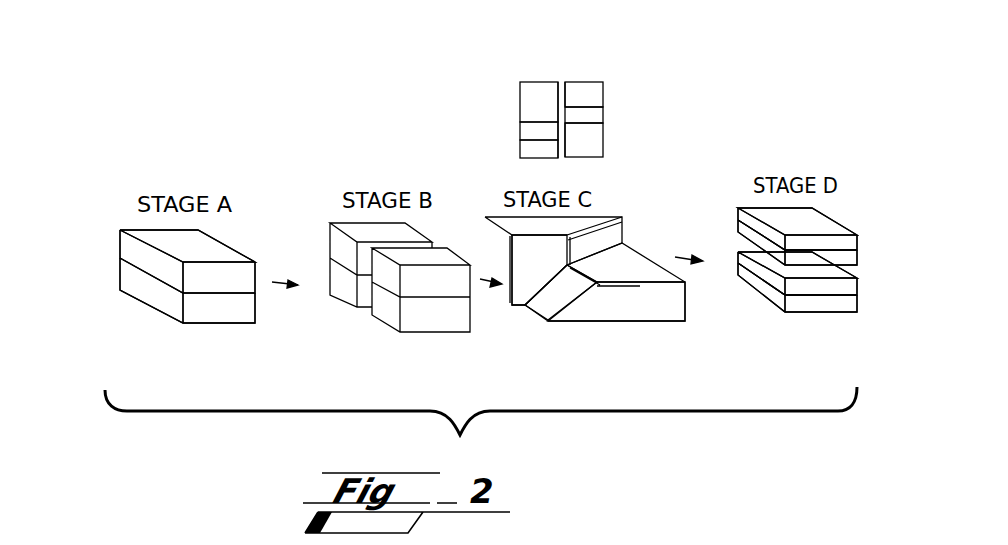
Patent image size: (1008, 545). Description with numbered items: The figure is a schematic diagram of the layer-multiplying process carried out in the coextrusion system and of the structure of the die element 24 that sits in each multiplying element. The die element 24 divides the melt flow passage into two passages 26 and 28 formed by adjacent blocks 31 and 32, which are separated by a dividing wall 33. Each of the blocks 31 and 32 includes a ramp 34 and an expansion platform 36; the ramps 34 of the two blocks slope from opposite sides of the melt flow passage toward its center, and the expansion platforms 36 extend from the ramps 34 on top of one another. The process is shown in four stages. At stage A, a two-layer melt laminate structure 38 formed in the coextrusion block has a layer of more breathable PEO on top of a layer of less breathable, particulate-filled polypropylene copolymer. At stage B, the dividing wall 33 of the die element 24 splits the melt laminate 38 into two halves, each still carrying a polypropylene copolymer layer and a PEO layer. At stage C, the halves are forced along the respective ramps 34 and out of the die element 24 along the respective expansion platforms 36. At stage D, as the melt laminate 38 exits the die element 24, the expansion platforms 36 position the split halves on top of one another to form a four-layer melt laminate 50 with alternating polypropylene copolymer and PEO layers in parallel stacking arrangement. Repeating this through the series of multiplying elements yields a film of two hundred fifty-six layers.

The die element 24 is at (622, 323).
The passage 26 is at (582, 249).
The passage 28 is at (498, 290).
The block 31 is at (667, 303).
The block 32 is at (622, 228).
The dividing wall 33 is at (566, 82).
The ramp 34 is at (525, 102).
The expansion platform 36 is at (587, 222).
The two-layer melt laminate structure 38 is at (236, 328).
The four-layer melt laminate 50 is at (857, 302).